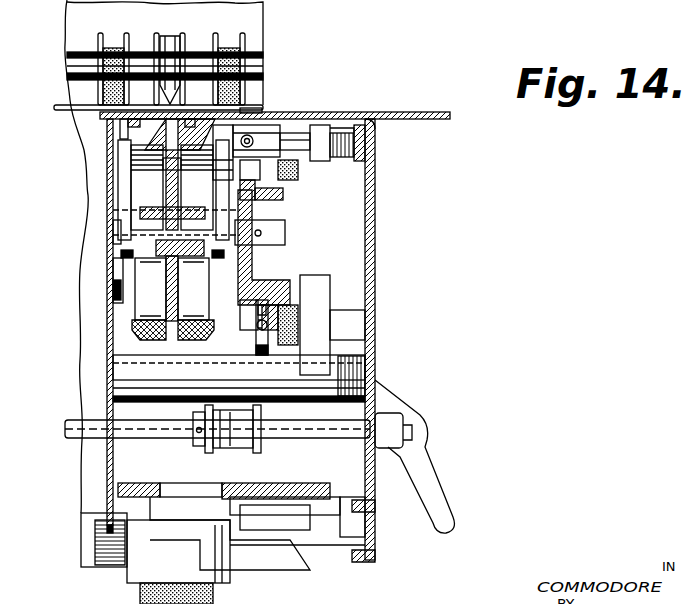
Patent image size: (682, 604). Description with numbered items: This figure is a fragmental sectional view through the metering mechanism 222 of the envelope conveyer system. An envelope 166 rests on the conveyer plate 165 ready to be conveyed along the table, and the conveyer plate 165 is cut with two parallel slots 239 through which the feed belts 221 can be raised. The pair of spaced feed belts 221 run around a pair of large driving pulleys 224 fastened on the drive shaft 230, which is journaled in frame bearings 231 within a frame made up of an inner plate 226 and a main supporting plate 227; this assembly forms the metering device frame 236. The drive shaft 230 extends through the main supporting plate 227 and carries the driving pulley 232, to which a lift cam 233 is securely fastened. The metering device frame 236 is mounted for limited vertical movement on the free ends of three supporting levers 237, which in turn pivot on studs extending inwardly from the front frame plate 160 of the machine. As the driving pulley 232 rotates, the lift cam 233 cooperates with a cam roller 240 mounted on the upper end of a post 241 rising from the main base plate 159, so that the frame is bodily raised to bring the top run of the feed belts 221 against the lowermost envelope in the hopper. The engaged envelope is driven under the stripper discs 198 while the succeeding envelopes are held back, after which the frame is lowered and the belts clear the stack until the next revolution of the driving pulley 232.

The main base plate 159 is at (112, 557).
The front frame plate 160 is at (375, 252).
The conveyer plate 165 is at (397, 112).
The envelope 166 is at (68, 112).
The stripper mechanism discs 198 is at (105, 101).
The feed belts 221 is at (258, 108).
The metering mechanism 222 is at (100, 205).
The large driving pulleys 224 is at (140, 333).
The inner plate 226 is at (123, 257).
The main supporting plate 227 is at (222, 345).
The drive shaft 230 is at (117, 230).
The frame bearings 231 is at (123, 265).
The driving pulley 232 is at (283, 272).
The lift cam 233 is at (252, 272).
The metering device frame 236 is at (122, 291).
The supporting levers 237 is at (200, 380).
The parallel slots 239 is at (134, 116).
The cam roller 240 is at (260, 353).
The post 241 is at (258, 458).